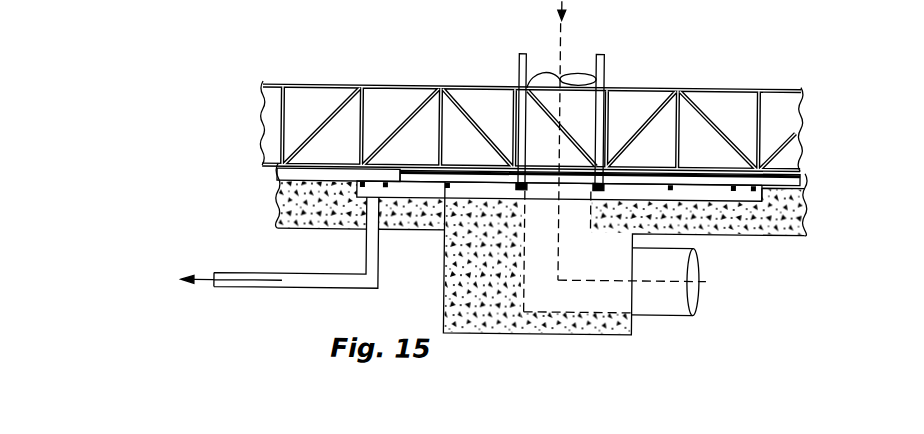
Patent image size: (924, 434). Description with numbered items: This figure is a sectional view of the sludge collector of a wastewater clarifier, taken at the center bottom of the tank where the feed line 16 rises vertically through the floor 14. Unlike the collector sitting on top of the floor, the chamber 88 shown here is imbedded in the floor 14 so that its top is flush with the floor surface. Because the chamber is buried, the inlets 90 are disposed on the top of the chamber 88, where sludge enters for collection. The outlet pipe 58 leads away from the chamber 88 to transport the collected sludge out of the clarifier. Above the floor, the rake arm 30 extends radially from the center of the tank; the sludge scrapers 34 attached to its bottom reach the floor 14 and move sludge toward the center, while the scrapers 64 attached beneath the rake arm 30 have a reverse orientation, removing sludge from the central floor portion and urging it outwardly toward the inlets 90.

The floor 14 is at (802, 182).
The feed line 16 is at (559, 73).
The rake arm 30 is at (381, 86).
The sludge scrapers 34 is at (285, 176).
The outlet pipe 58 is at (290, 289).
The scrapers 64 is at (460, 178).
The chamber 88 is at (715, 198).
The inlets 90 is at (521, 186).